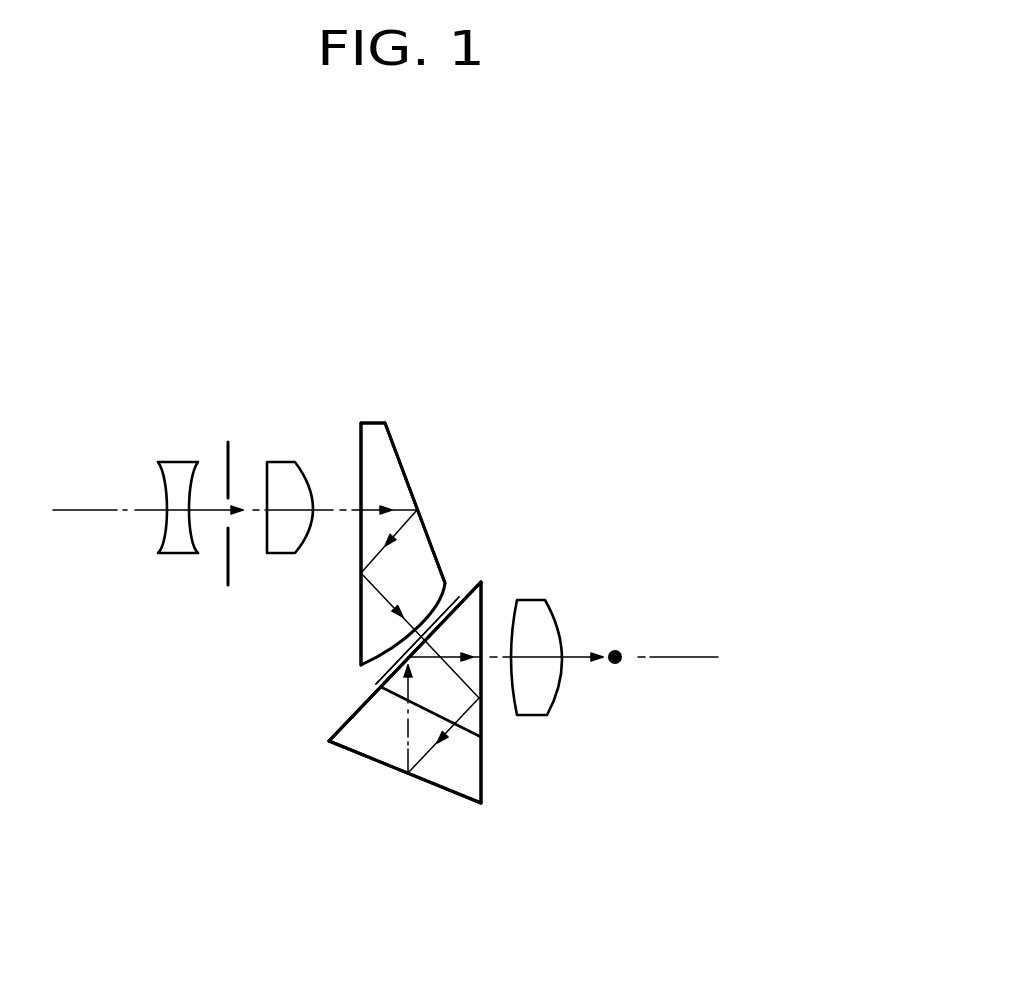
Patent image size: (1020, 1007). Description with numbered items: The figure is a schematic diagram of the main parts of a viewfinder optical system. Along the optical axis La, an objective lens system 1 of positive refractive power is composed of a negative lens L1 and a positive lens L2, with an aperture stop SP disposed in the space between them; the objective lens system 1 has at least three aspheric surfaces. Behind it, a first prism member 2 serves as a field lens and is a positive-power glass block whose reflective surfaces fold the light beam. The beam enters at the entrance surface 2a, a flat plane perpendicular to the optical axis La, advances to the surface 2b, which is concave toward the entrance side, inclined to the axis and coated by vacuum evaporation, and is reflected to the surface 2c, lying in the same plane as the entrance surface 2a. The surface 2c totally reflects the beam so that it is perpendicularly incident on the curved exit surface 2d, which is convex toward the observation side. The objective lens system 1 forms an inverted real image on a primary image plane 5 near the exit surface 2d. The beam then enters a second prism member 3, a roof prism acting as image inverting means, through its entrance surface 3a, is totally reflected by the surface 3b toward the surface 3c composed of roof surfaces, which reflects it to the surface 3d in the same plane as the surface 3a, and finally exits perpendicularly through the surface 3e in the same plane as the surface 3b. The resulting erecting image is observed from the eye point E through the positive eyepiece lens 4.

The objective lens system 1 is at (381, 456).
The negative lens L1 is at (180, 478).
The positive lens L2 is at (286, 480).
The aperture stop SP is at (225, 563).
The optical axis La is at (75, 512).
The first prism member 2 is at (536, 512).
The entrance surface 2a is at (362, 438).
The surface 2b is at (415, 493).
The surface 2c is at (360, 636).
The exit surface 2d is at (455, 598).
The second prism member 3 is at (521, 721).
The entrance surface 3a is at (466, 590).
The surface 3d is at (454, 633).
The surface 3b is at (480, 775).
The surface 3e is at (512, 744).
The surface 3c is at (360, 755).
The eyepiece lens 4 is at (535, 612).
The primary image plane 5 is at (364, 687).
The eye point E is at (620, 663).